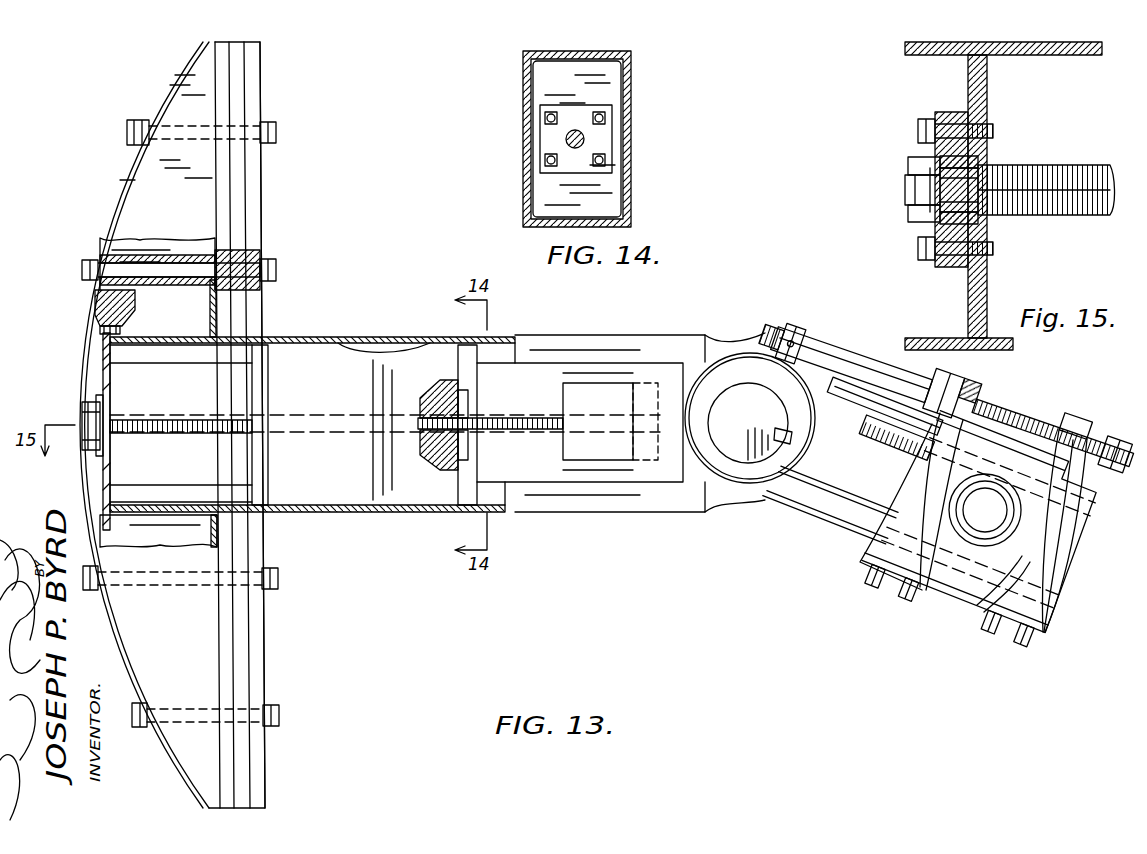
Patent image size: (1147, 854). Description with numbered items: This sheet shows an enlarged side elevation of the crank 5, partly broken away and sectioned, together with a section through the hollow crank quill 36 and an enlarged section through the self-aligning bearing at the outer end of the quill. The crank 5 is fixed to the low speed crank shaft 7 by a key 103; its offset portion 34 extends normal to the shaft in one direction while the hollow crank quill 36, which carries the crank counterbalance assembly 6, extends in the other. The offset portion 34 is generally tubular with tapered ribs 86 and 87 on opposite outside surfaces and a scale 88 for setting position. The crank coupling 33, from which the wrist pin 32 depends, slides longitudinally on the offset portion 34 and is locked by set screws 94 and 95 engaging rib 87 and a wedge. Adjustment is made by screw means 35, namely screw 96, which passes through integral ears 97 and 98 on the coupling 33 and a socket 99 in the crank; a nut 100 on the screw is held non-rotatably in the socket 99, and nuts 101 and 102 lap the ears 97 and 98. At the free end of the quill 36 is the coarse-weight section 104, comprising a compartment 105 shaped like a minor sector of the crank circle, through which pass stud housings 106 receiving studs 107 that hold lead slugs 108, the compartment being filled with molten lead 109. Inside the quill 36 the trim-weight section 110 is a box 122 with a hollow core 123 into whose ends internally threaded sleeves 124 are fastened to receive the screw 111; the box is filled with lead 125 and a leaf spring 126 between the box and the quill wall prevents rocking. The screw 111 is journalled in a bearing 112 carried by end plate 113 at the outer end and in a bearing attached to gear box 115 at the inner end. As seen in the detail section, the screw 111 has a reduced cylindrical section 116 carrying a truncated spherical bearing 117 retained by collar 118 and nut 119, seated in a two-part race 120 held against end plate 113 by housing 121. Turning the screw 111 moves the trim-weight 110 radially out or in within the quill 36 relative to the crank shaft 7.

In FIG. 13, the crank 5 is at (826, 526).
In FIG. 13, the crank counterbalance assembly 6 is at (172, 75).
In FIG. 13, the crank shaft 7 is at (744, 400).
In FIG. 13, the wrist pin 32 is at (1000, 518).
In FIG. 13, the crank coupling 33 is at (868, 556).
In FIG. 13, the offset portion 34 is at (826, 480).
In FIG. 13, the screw means 35 is at (1040, 424).
In FIG. 13, the hollow crank quill 36 is at (572, 337).
In FIG. 14, the hollow crank quill 36 is at (528, 68).
In FIG. 13, the tapered rib 86 is at (888, 420).
In FIG. 13, the tapered rib 87 is at (852, 522).
In FIG. 13, the scale 88 is at (884, 446).
In FIG. 13, the set screw 94 is at (872, 592).
In FIG. 13, the set screw 95 is at (982, 625).
In FIG. 13, the screw 96 is at (858, 360).
In FIG. 13, the ear 97 is at (988, 386).
In FIG. 13, the ear 98 is at (1085, 424).
In FIG. 13, the socket 99 is at (788, 326).
In FIG. 13, the nut 100 is at (802, 333).
In FIG. 13, the nut 101 is at (948, 383).
In FIG. 13, the nut 102 is at (1104, 438).
In FIG. 13, the key 103 is at (768, 482).
In FIG. 13, the coarse-weight section 104 is at (118, 184).
In FIG. 13, the compartment 105 is at (118, 243).
In FIG. 13, the stud housing 106 is at (172, 255).
In FIG. 13, the stud 107 is at (277, 132).
In FIG. 13, the lead slug 108 is at (233, 190).
In FIG. 13, the molten lead 109 is at (108, 303).
In FIG. 13, the trim-weight section 110 is at (385, 512).
In FIG. 13, the screw 111 is at (542, 434).
In FIG. 14, the screw 111 is at (566, 136).
In FIG. 15, the screw 111 is at (1060, 178).
In FIG. 13, the bearing 112 is at (95, 415).
In FIG. 15, the bearing 112 is at (939, 276).
In FIG. 13, the end plate 113 is at (106, 376).
In FIG. 15, the end plate 113 is at (980, 90).
In FIG. 13, the gear box 115 is at (176, 441).
In FIG. 15, the cylindrical section 116 is at (968, 178).
In FIG. 15, the truncated spherical bearing 117 is at (975, 160).
In FIG. 15, the collar 118 is at (925, 190).
In FIG. 15, the nut 119 is at (912, 160).
In FIG. 15, the two-part race 120 is at (978, 220).
In FIG. 15, the housing 121 is at (948, 118).
In FIG. 13, the box 122 is at (418, 360).
In FIG. 14, the box 122 is at (610, 88).
In FIG. 13, the hollow core 123 is at (434, 458).
In FIG. 13, the internally threaded sleeve 124 is at (479, 410).
In FIG. 14, the internally threaded sleeve 124 is at (602, 132).
In FIG. 13, the lead 125 is at (446, 400).
In FIG. 13, the leaf spring 126 is at (360, 343).